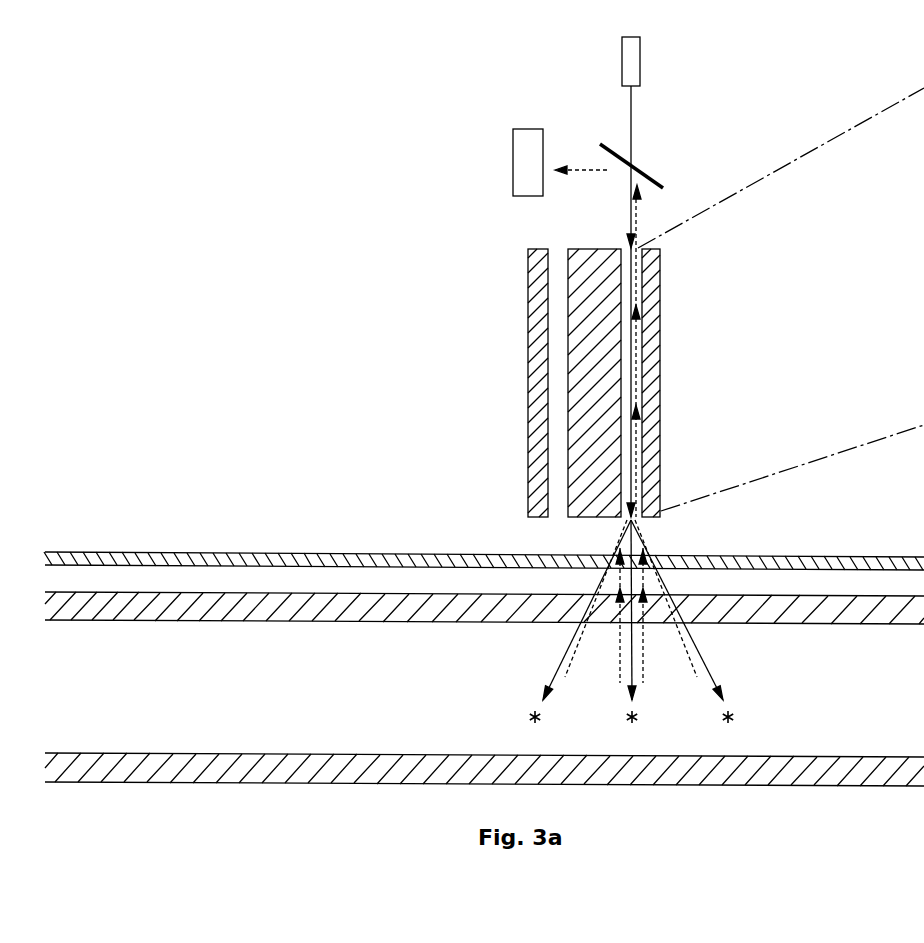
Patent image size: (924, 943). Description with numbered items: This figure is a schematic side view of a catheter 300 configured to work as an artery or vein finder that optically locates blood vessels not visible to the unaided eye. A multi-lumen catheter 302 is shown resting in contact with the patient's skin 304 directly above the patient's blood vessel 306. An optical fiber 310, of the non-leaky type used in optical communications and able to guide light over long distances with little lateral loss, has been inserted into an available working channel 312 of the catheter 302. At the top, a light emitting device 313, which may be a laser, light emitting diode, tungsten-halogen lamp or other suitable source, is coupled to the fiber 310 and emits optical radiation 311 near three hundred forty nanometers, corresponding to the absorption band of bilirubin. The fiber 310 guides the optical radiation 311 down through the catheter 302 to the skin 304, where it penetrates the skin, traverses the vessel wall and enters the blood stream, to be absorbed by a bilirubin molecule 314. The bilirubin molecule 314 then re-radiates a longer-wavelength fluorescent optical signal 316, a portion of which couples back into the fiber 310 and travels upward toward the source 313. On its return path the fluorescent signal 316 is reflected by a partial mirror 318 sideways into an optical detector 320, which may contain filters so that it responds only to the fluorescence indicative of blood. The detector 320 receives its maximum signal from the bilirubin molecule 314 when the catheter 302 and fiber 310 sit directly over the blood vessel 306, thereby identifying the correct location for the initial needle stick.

The catheter 300 is at (205, 218).
The multi-lumen catheter 302 is at (645, 251).
The patient's skin 304 is at (100, 555).
The blood vessel 306 is at (165, 697).
The optical fiber 310 is at (636, 292).
The optical radiation 311 is at (633, 103).
The working channel 312 is at (635, 246).
The light emitting device 313 is at (621, 66).
The bilirubin molecule 314 is at (530, 718).
The fluorescent optical signal 316 is at (695, 663).
The partial mirror 318 is at (641, 168).
The optical detector 320 is at (517, 152).